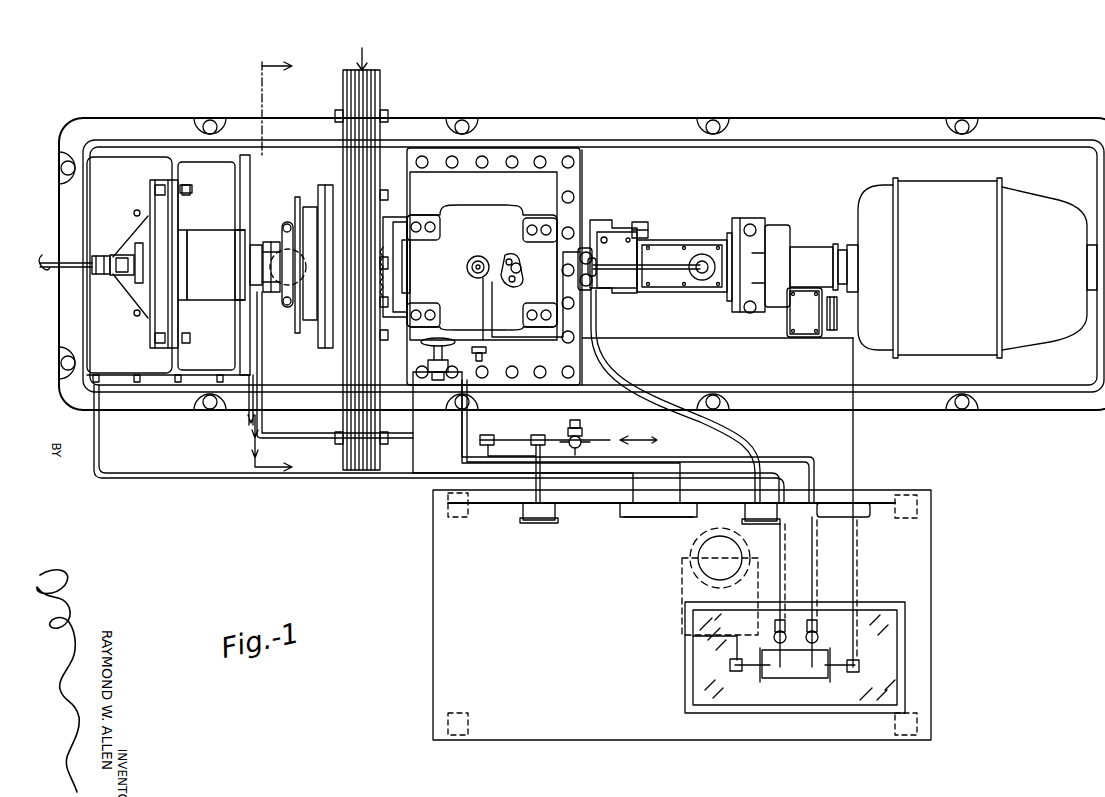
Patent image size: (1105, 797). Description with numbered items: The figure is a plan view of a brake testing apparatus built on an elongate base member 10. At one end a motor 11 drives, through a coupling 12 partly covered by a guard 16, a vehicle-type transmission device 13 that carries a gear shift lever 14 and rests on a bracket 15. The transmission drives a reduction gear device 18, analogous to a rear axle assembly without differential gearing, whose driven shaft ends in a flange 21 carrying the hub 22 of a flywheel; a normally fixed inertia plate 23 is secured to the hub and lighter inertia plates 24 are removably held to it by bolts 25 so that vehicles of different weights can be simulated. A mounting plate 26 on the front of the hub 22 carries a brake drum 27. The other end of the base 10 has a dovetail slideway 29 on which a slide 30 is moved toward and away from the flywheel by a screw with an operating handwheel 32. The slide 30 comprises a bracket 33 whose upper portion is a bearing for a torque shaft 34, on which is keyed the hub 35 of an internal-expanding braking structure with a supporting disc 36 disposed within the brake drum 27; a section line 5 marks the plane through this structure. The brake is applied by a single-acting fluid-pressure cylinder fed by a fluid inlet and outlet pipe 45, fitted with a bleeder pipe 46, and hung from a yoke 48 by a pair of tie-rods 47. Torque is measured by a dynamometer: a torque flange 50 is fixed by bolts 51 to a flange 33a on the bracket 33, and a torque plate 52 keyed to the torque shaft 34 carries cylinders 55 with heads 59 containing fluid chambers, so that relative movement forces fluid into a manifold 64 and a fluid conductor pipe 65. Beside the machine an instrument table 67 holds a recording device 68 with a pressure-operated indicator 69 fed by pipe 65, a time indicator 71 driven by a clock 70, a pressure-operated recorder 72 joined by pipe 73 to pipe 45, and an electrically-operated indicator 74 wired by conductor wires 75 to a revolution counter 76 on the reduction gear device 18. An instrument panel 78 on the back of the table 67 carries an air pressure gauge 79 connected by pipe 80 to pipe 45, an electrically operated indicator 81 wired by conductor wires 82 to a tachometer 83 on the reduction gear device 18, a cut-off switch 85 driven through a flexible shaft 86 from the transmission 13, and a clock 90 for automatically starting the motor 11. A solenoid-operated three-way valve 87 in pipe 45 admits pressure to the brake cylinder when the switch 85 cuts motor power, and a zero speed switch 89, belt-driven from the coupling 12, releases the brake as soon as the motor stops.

The base member 10 is at (633, 160).
The motor 11 is at (977, 268).
The coupling 12 is at (815, 256).
The transmission device 13 is at (668, 253).
The gear shift lever 14 is at (672, 284).
The bracket 15 is at (732, 312).
The guard 16 is at (781, 238).
The reduction gear device 18 is at (483, 217).
The flange 21 is at (387, 232).
The hub 22 is at (333, 183).
The inertia plate 23 is at (381, 84).
The inertia plates 24 is at (360, 52).
The bolts 25 is at (388, 114).
The mounting plate 26 is at (322, 192).
The brake drum 27 is at (310, 322).
The dovetail slideway 29 is at (248, 216).
The slide 30 is at (116, 168).
The operating handwheel 32 is at (62, 290).
The bracket 33 is at (227, 322).
The flange 33a is at (182, 190).
The torque shaft 34 is at (256, 246).
The hub 35 is at (264, 248).
The supporting disc 36 is at (297, 198).
The fluid inlet and outlet pipe 45 is at (314, 443).
The bleeder pipe 46 is at (250, 396).
The tie-rods 47 is at (284, 222).
The yoke 48 is at (282, 305).
The torque flange 50 is at (162, 192).
The bolts 51 is at (190, 206).
The torque plate 52 is at (152, 340).
The cylinders 55 is at (133, 290).
The heads 59 is at (135, 211).
The manifold 64 is at (104, 254).
The fluid conductor pipe 65 is at (101, 440).
The instrument table 67 is at (433, 650).
The recording device 68 is at (790, 680).
The pressure-operated indicator 69 is at (786, 640).
The clock 70 is at (683, 576).
The time indicator 71 is at (750, 670).
The pressure-operated recorder 72 is at (818, 648).
The pipe 73 is at (686, 459).
The electrically-operated indicator 74 is at (838, 672).
The conductor wires 75 is at (856, 462).
The revolution counter 76 is at (506, 256).
The instrument panel 78 is at (885, 496).
The air pressure gauge 79 is at (534, 514).
The pipe 80 is at (526, 445).
The electrically operated indicator 81 is at (632, 514).
The conductor wires 82 is at (462, 452).
The tachometer 83 is at (441, 382).
The cut-off switch 85 is at (744, 515).
The flexible shaft 86 is at (760, 448).
The solenoid-operated three-way valve 87 is at (584, 436).
The zero speed switch 89 is at (790, 322).
The clock 90 is at (866, 516).
The section line 5 is at (266, 267).